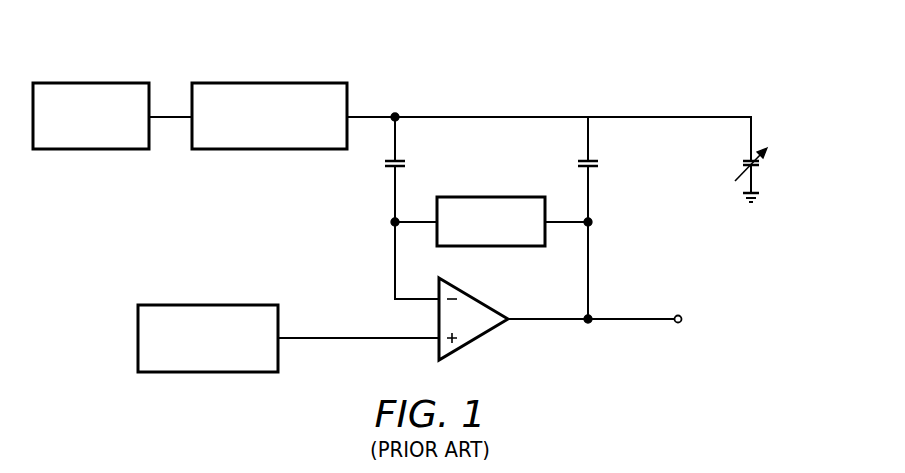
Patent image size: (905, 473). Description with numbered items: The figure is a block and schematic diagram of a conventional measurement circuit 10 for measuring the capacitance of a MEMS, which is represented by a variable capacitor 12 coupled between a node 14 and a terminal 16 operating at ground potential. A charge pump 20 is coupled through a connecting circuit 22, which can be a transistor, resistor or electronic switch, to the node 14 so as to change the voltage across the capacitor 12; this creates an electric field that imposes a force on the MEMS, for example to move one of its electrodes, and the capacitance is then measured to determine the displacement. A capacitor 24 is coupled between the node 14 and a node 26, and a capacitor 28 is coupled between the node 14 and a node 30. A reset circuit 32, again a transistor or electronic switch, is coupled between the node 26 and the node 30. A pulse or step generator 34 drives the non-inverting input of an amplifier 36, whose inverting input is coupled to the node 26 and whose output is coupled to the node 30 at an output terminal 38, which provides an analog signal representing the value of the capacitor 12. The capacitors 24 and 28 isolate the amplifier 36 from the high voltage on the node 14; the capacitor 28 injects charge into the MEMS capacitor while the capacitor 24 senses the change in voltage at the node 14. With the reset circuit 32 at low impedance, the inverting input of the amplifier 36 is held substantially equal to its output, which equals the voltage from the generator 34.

The measurement circuit 10 is at (773, 81).
The variable capacitor 12 is at (762, 165).
The node 14 is at (397, 110).
The terminal 16 is at (758, 198).
The charge pump 20 is at (90, 83).
The connecting circuit 22 is at (268, 83).
The capacitor 24 is at (385, 165).
The node 26 is at (393, 222).
The capacitor 28 is at (600, 166).
The node 30 is at (593, 222).
The reset circuit 32 is at (492, 197).
The pulse or step generator 34 is at (208, 305).
The amplifier 36 is at (475, 340).
The output terminal 38 is at (684, 322).